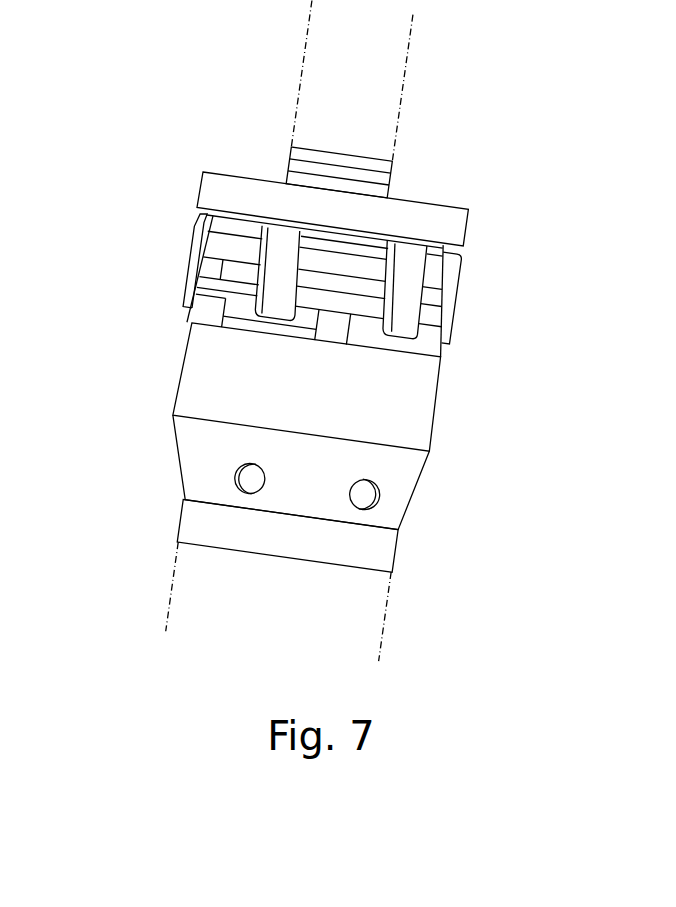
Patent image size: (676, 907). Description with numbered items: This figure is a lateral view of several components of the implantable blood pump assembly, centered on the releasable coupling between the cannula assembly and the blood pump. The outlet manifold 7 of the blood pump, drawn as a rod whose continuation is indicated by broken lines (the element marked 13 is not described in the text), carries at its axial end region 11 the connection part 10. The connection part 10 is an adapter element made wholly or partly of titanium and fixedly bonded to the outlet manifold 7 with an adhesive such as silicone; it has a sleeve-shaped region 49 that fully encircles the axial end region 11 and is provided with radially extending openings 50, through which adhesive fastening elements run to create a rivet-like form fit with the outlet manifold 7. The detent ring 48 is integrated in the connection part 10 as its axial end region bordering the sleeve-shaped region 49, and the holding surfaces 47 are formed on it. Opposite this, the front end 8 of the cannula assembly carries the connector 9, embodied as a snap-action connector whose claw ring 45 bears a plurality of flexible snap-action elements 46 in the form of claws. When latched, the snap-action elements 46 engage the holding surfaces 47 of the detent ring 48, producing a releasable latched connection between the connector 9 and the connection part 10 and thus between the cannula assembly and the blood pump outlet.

The outlet manifold 7 is at (373, 608).
The front end 8 is at (180, 177).
The connector 9 is at (185, 216).
The connection part 10 is at (407, 397).
The axial end region 11 is at (193, 582).
The rod 13 is at (331, 173).
The claw ring 45 is at (423, 212).
The snap-action elements 46 is at (460, 287).
The holding surfaces 47 is at (248, 300).
The detent ring 48 is at (231, 330).
The sleeve-shaped region 49 is at (410, 467).
The openings 50 is at (378, 497).